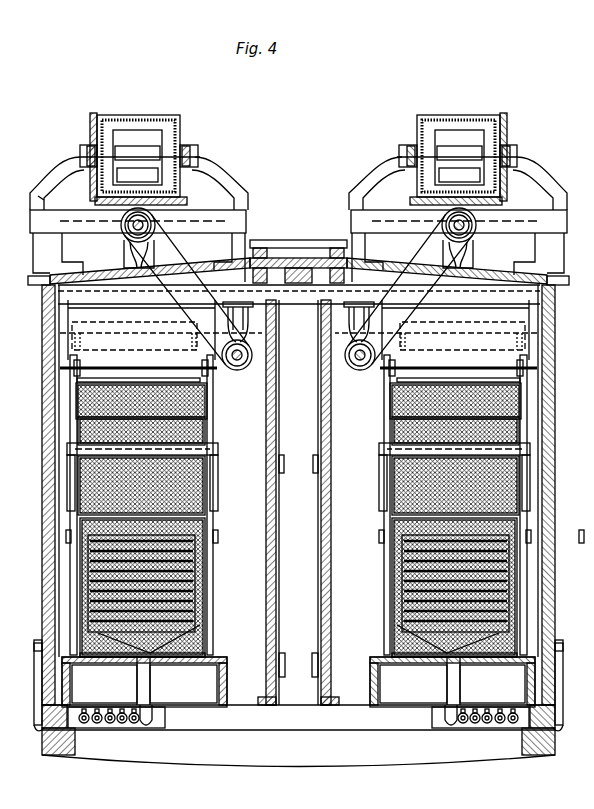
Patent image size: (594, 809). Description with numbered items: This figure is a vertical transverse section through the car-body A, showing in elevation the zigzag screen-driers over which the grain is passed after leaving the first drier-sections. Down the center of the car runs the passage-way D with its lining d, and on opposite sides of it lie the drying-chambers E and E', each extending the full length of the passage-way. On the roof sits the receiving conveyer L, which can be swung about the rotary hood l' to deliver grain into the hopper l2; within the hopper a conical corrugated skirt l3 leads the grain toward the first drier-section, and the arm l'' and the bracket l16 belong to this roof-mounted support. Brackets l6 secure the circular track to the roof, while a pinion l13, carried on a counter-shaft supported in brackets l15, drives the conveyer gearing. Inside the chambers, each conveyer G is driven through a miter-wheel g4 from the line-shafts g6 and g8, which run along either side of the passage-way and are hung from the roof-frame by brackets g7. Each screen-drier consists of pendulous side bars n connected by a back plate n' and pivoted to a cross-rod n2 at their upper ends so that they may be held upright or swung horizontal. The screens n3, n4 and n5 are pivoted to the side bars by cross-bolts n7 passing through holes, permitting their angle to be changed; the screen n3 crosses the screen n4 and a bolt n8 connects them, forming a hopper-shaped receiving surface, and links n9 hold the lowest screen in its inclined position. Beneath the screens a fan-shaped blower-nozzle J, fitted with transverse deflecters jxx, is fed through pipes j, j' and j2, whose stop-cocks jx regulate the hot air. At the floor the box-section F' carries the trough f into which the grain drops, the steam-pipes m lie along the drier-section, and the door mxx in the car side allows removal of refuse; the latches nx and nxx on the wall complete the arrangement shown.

The car-body A is at (50, 481).
The conveyer L is at (135, 136).
The rotary hood l' is at (298, 206).
The motor frame arm l'' is at (23, 189).
The hopper l2 is at (228, 242).
The conical corrugated skirt l3 is at (33, 260).
The brackets l6 is at (36, 279).
The pinion l13 is at (170, 212).
The brackets l15 is at (122, 246).
The housing inner step l16 is at (165, 248).
The conveyer G is at (70, 338).
The miter-wheel g4 is at (228, 338).
The line-shaft g6 is at (359, 368).
The brackets g7 is at (344, 316).
The line-shaft g8 is at (237, 368).
The cross-rod n2 is at (140, 365).
The back plate n' is at (298, 376).
The screen n4 is at (206, 408).
The side bars n is at (298, 467).
The screen n3 is at (462, 500).
The screen n5 is at (394, 496).
The bolt n8 is at (217, 470).
The cross-bolts n7 is at (200, 624).
The links n9 is at (206, 654).
The blower-nozzle J is at (204, 572).
The transverse deflecters jxx is at (198, 554).
The drying-chamber E is at (438, 505).
The drying-chamber E' is at (153, 505).
The passage-way D is at (298, 502).
The partition lining d is at (320, 520).
The latch nx is at (34, 646).
The latch hook nxx is at (42, 712).
The steam-pipes m is at (556, 694).
The door mxx is at (562, 700).
The lamp box F' is at (298, 682).
The trough f is at (183, 684).
The stop-cocks jx is at (468, 716).
The pipe j is at (298, 706).
The pipe j' is at (298, 734).
The pipe j2 is at (120, 724).